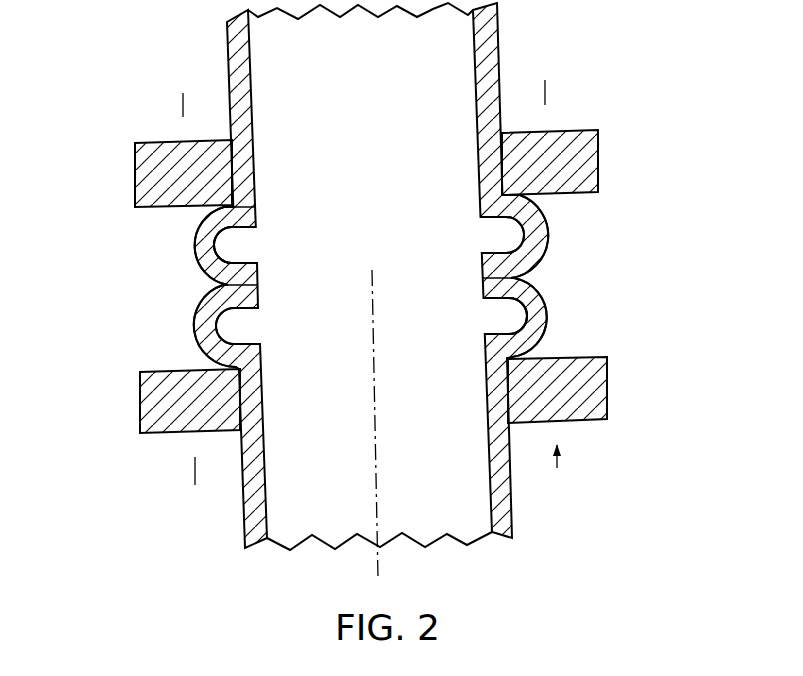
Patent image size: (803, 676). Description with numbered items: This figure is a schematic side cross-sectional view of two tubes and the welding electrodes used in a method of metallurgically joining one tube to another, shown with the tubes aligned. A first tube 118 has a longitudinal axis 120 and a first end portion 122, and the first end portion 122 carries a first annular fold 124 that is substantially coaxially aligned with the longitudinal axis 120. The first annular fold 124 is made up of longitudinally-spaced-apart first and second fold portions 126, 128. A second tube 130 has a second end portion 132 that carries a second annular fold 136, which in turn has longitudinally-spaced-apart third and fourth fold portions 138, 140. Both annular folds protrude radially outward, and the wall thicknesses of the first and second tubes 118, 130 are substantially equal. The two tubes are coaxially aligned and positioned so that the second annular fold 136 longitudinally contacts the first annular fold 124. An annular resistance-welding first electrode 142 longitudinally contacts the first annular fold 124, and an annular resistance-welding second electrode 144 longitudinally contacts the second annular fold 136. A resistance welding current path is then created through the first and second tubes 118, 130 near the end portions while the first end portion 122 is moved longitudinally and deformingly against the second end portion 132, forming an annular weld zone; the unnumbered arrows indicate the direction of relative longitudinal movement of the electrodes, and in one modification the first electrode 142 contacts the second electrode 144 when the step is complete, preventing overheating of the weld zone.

The first tube 118 is at (534, 507).
The longitudinal axis 120 is at (375, 418).
The first end portion 122 is at (191, 325).
The first annular fold 124 is at (550, 306).
The first fold portion 126 is at (488, 306).
The second fold portion 128 is at (507, 334).
The second tube 130 is at (214, 56).
The second end portion 132 is at (554, 234).
The second annular fold 136 is at (195, 246).
The third fold portion 138 is at (250, 257).
The fourth fold portion 140 is at (250, 228).
The first electrode 142 is at (592, 382).
The second electrode 144 is at (135, 163).